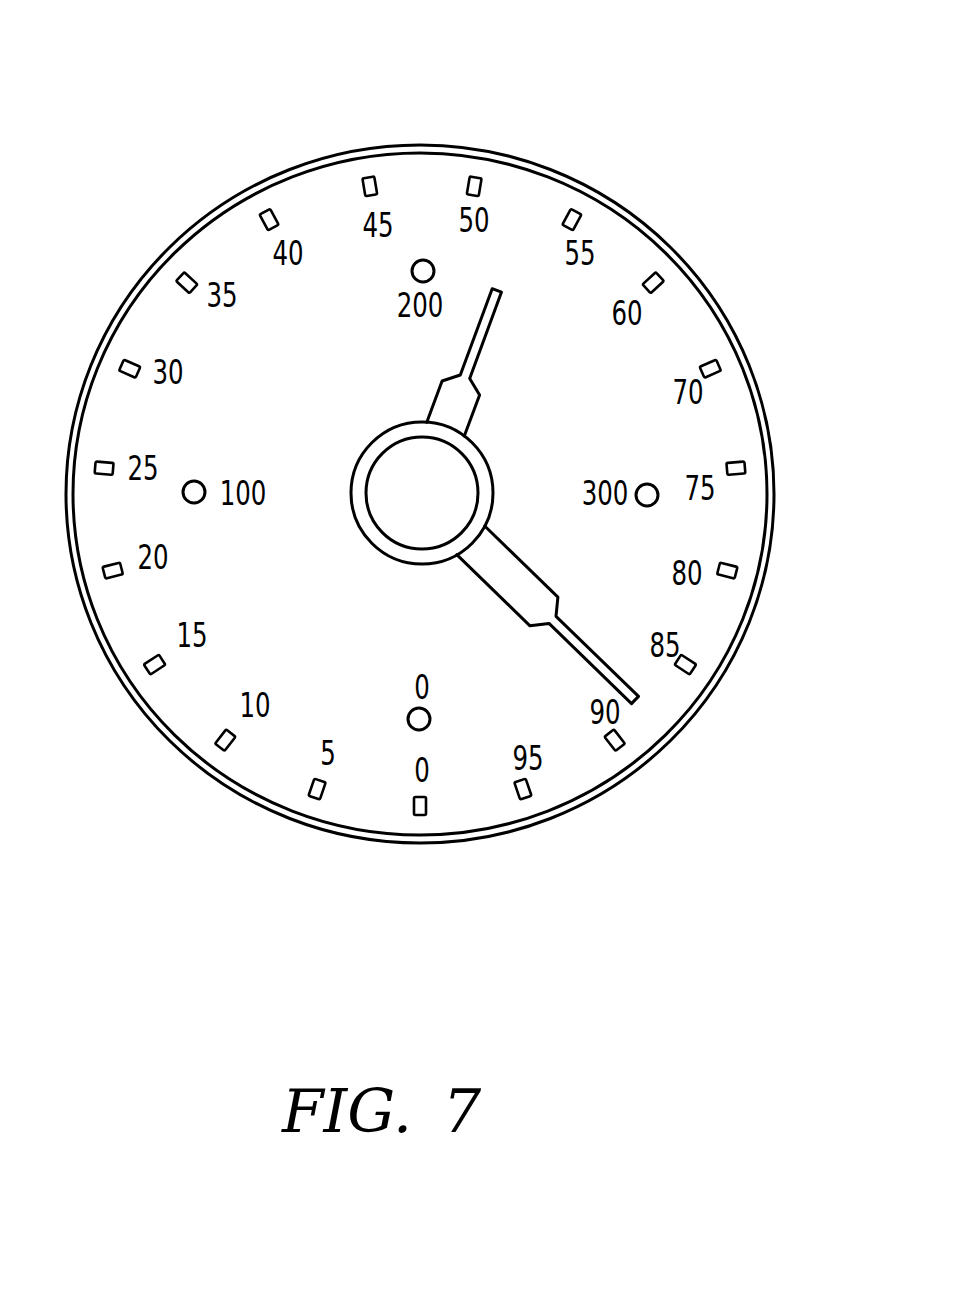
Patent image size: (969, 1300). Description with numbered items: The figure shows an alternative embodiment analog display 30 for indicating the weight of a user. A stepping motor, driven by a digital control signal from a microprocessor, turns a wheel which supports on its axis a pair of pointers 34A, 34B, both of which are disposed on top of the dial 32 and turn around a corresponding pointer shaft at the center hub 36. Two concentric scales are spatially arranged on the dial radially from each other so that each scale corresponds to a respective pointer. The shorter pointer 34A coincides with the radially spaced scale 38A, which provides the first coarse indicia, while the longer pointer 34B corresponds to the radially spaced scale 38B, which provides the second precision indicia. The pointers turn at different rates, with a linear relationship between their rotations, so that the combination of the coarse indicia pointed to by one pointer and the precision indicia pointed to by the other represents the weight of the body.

The analog display 30 is at (388, 100).
The dial 32 is at (515, 297).
The pointer 34A is at (453, 403).
The pointer 34B is at (582, 632).
The central hub 36 is at (452, 480).
The radially spaced scale 38A is at (202, 482).
The radially spaced scale 38B is at (283, 218).